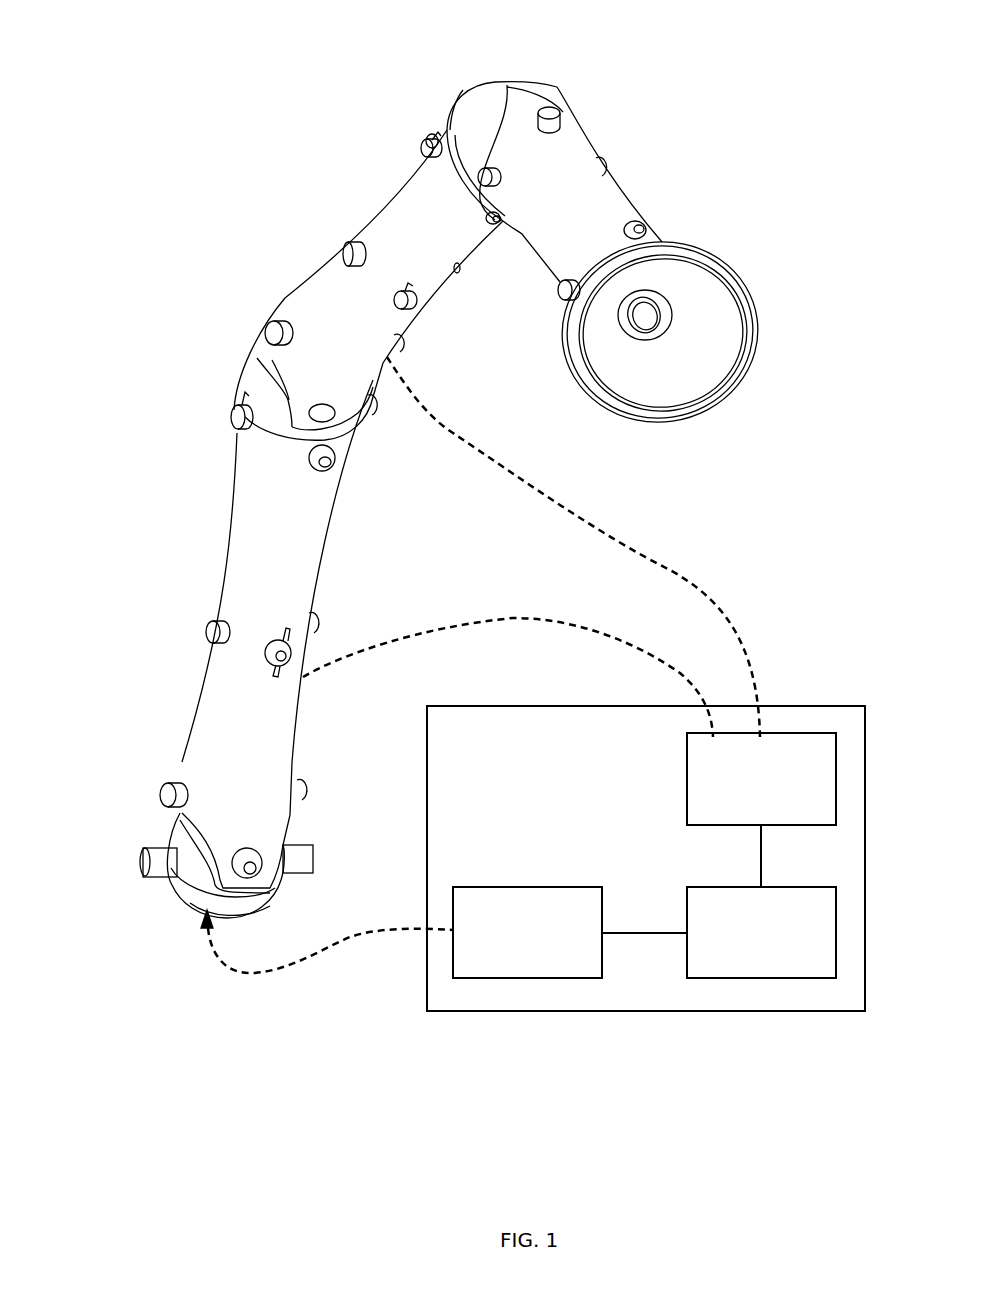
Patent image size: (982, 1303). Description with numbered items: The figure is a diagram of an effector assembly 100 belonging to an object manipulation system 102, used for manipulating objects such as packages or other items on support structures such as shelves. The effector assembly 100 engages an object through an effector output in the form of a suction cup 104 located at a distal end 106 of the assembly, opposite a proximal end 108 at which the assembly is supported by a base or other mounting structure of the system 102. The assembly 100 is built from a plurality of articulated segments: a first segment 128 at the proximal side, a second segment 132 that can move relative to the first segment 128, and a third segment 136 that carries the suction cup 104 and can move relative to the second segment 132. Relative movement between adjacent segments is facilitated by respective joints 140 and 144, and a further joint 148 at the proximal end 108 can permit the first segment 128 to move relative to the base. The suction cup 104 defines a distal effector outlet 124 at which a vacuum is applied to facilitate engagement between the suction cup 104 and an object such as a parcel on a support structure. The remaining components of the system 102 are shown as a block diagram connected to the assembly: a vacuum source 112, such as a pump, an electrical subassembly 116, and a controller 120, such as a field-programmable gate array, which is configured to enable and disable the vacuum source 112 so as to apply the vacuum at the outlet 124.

The effector assembly 100 is at (368, 215).
The object manipulation system 102 is at (298, 1072).
The suction cup 104 is at (742, 356).
The distal end 106 is at (660, 232).
The proximal end 108 is at (137, 828).
The vacuum source 112 is at (527, 932).
The electrical subassembly 116 is at (761, 779).
The controller 120 is at (761, 932).
The distal effector outlet 124 is at (645, 315).
The first segment 128 is at (228, 584).
The second segment 132 is at (296, 280).
The third segment 136 is at (625, 196).
The joint 140 is at (262, 358).
The joint 144 is at (490, 87).
The further joint 148 is at (187, 900).